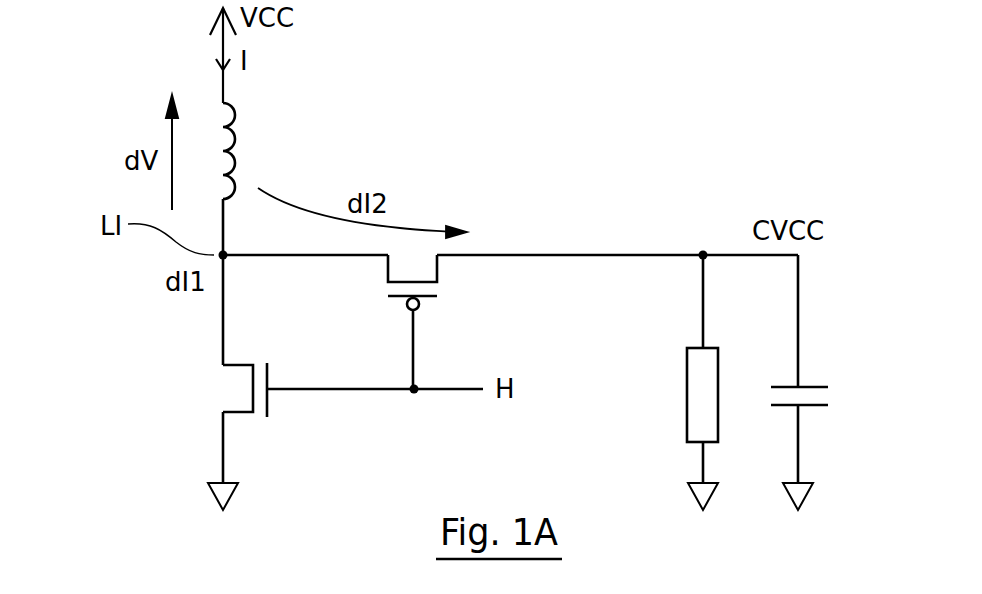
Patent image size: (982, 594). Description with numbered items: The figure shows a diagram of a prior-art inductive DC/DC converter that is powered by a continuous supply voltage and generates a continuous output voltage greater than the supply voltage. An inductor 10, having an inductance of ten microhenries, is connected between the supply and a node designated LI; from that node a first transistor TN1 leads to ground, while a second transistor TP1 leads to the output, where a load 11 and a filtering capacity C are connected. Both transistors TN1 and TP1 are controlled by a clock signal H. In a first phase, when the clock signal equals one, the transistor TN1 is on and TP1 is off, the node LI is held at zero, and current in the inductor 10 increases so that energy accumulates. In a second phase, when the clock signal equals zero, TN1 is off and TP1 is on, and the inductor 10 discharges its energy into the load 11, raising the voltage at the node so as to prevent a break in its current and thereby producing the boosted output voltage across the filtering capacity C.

The inductor 10 is at (245, 158).
The load 11 is at (687, 399).
The second transistor TP1 is at (385, 322).
The first transistor TN1 is at (261, 407).
The filtering capacity C is at (814, 393).